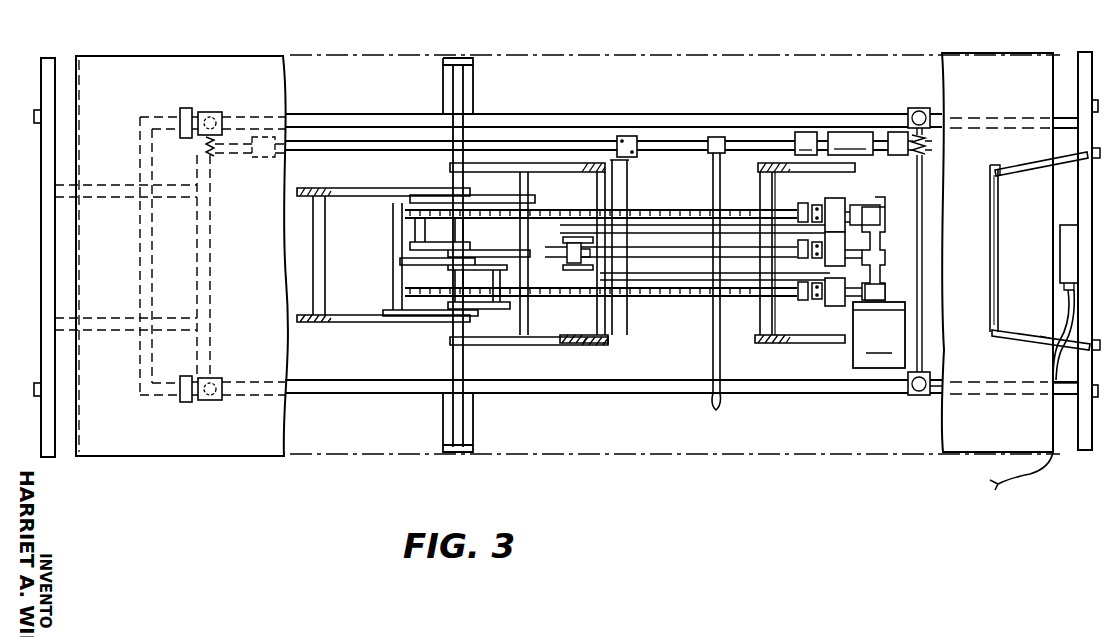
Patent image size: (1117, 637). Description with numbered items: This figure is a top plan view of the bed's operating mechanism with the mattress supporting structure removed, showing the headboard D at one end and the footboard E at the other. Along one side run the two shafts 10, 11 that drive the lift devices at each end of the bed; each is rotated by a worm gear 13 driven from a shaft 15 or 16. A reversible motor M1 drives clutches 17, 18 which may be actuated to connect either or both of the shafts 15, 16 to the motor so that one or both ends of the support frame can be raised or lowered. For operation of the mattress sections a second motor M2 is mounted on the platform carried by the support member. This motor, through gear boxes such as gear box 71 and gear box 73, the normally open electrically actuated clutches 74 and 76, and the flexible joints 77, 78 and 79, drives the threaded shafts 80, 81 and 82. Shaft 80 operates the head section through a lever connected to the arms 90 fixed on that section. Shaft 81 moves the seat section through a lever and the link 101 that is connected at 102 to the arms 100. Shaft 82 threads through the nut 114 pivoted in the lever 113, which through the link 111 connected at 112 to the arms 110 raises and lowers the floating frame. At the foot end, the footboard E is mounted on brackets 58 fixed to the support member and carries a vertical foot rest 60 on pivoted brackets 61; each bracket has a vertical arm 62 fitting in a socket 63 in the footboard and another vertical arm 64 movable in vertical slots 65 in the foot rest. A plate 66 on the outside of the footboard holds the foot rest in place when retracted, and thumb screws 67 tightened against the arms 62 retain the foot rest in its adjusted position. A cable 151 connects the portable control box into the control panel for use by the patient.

The shaft 10 is at (922, 242).
The shaft 11 is at (211, 349).
The worm gear 13 is at (216, 158).
The shaft 15 is at (930, 146).
The shaft 16 is at (515, 147).
The clutch 17 is at (899, 142).
The clutch 18 is at (803, 140).
The motor M1 is at (850, 140).
The motor M2 is at (879, 335).
The brackets 58 is at (1063, 385).
The foot rest 60 is at (991, 250).
The pivoted brackets 61 is at (1021, 168).
The vertical arm 62 is at (1030, 340).
The socket 63 is at (1056, 336).
The vertical arm 64 is at (996, 171).
The vertical slots 65 is at (997, 232).
The plate 66 is at (1088, 202).
The thumb screws 67 is at (1086, 156).
The gear box 71 is at (885, 292).
The gear box 73 is at (876, 256).
The clutch 74 is at (838, 305).
The clutch 76 is at (838, 262).
The flexible coupling 77 is at (818, 334).
The flexible joint 78 is at (840, 205).
The flexible joint 79 is at (797, 285).
The threaded shaft 80 is at (676, 298).
The threaded shaft 81 is at (668, 250).
The shaft 82 is at (672, 212).
The arms 90 is at (366, 318).
The arms 100 is at (505, 340).
The link 101 is at (536, 200).
The connection point 102 is at (528, 312).
The arms 110 is at (806, 344).
The link 111 is at (700, 274).
The connection point 112 is at (764, 320).
The lever 113 is at (572, 240).
The nut 114 is at (566, 255).
The cable 151 is at (1000, 485).
The headboard D is at (33, 414).
The footboard E is at (1082, 465).